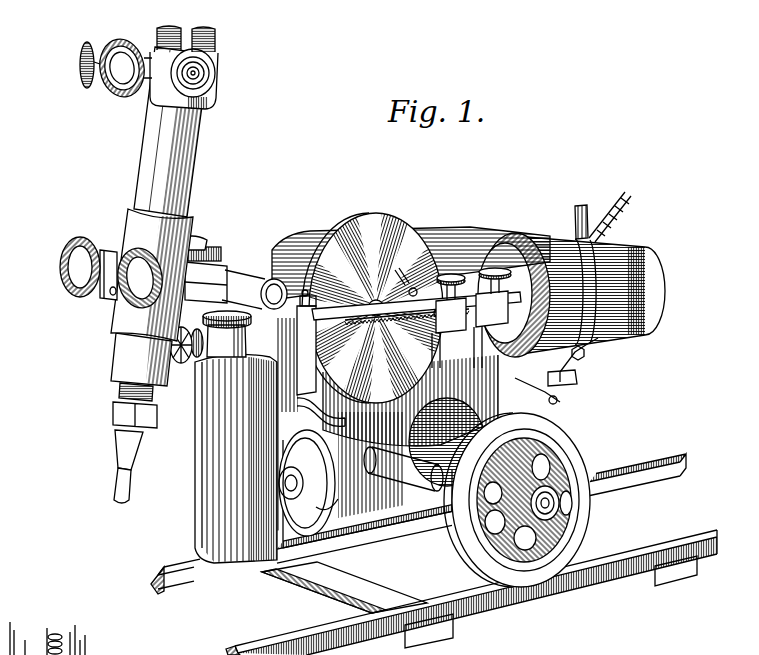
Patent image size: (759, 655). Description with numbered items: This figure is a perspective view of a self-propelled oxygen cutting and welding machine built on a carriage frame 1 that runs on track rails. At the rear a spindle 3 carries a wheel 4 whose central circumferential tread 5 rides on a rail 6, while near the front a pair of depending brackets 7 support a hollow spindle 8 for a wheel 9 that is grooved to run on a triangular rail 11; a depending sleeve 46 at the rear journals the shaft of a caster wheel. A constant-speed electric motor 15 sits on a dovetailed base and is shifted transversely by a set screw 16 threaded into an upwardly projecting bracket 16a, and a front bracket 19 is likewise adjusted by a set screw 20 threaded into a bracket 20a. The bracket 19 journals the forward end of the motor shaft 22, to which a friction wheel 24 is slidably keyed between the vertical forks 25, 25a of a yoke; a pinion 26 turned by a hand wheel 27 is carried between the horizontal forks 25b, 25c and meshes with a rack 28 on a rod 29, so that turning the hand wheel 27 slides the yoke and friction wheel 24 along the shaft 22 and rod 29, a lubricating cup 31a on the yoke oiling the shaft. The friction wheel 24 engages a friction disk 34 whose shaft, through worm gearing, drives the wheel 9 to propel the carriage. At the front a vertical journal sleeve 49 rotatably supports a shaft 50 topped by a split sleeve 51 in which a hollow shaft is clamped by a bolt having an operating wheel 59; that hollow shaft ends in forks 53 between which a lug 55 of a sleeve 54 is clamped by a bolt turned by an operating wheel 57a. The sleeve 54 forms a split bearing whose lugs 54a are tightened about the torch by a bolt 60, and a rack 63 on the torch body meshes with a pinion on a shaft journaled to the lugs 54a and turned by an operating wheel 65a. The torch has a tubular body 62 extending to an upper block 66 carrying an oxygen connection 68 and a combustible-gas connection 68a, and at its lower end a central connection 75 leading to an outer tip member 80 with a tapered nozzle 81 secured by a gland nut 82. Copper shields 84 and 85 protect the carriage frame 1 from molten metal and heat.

The carriage frame 1 is at (434, 402).
The spindle 3 is at (427, 487).
The wheel 4 is at (588, 513).
The central circumferential tread 5 is at (453, 540).
The rail 6 is at (413, 612).
The depending bracket 7 is at (301, 473).
The hollow spindle 8 is at (270, 487).
The wheel 9 is at (318, 506).
The triangular rail 11 is at (371, 542).
The constant-speed electric motor 15 is at (540, 247).
The set screw 16 is at (603, 349).
The upwardly projecting bracket 16a is at (583, 371).
The bracket 19 is at (272, 365).
The set screw 20 is at (350, 387).
The upwardly projecting bracket 20a is at (296, 402).
The motor shaft 22 is at (344, 308).
The friction wheel 24 is at (412, 288).
The vertical fork 25 is at (405, 294).
The vertical fork 25a is at (492, 290).
The horizontal fork 25b is at (400, 280).
The horizontal fork 25c is at (508, 313).
The pinion 26 is at (436, 328).
The operating hand wheel 27 is at (492, 271).
The rack 28 is at (378, 318).
The rod 29 is at (322, 326).
The lubricating cup 31a is at (563, 393).
The friction disk 34 is at (375, 226).
The depending sleeve 46 is at (556, 401).
The vertical journal sleeve 49 is at (201, 358).
The shaft 50 is at (210, 318).
The split sleeve 51 is at (230, 271).
The forks 53 is at (196, 257).
The sleeve 54 is at (135, 219).
The lugs or extensions 54a is at (108, 242).
The lug or projection 55 is at (179, 248).
The operating wheel 57a is at (120, 297).
The operating wheel 59 is at (222, 266).
The bolt 60 is at (110, 291).
The tubular body 62 is at (188, 148).
The rack 63 is at (84, 653).
The operating wheel 65a is at (72, 260).
The block 66 is at (216, 93).
The connection for oxygen 68 is at (215, 42).
The connection for combustible gas 68a is at (168, 31).
The central connection 75 is at (118, 393).
The outer tip member 80 is at (122, 445).
The tapered discharge end or nozzle 81 is at (117, 485).
The gland nut 82 is at (114, 413).
The copper shield 84 is at (412, 492).
The copper shield 85 is at (207, 507).